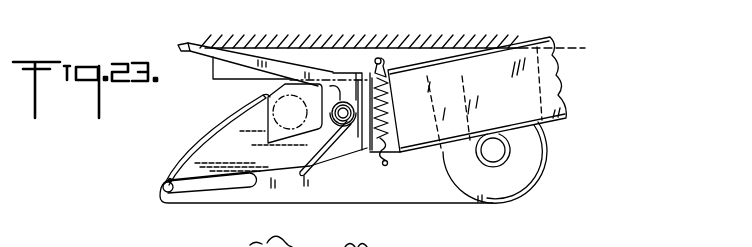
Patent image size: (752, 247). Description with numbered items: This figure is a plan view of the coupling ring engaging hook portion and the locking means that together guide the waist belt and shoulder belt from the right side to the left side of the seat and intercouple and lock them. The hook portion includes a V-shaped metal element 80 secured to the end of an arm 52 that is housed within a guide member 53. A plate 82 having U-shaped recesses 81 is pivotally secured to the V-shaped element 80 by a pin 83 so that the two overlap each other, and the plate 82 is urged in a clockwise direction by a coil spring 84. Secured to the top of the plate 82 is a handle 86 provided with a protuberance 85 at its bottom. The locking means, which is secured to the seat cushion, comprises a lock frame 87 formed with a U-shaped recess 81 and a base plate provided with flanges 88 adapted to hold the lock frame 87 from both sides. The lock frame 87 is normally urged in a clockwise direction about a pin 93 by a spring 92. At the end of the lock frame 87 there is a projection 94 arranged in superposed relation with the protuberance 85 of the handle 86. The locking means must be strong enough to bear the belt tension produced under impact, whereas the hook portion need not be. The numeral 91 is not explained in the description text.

The arm 52 is at (392, 74).
The guide member 53 is at (453, 63).
The V-shaped metal element 80 is at (180, 47).
The U-shaped recesses 81 is at (272, 124).
The plate 82 is at (207, 130).
The pin 83 is at (338, 106).
The coil spring 84 is at (346, 151).
The protuberance 85 is at (170, 178).
The handle 86 is at (182, 204).
The lock frame 87 is at (435, 204).
The flanges 88 is at (530, 156).
The guide surface 91 is at (490, 40).
The spring 92 is at (378, 58).
The pin 93 is at (485, 144).
The projection 94 is at (160, 199).